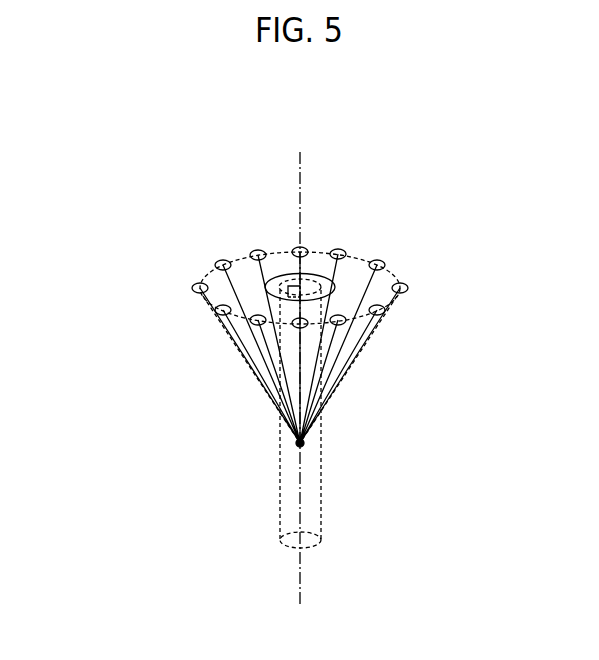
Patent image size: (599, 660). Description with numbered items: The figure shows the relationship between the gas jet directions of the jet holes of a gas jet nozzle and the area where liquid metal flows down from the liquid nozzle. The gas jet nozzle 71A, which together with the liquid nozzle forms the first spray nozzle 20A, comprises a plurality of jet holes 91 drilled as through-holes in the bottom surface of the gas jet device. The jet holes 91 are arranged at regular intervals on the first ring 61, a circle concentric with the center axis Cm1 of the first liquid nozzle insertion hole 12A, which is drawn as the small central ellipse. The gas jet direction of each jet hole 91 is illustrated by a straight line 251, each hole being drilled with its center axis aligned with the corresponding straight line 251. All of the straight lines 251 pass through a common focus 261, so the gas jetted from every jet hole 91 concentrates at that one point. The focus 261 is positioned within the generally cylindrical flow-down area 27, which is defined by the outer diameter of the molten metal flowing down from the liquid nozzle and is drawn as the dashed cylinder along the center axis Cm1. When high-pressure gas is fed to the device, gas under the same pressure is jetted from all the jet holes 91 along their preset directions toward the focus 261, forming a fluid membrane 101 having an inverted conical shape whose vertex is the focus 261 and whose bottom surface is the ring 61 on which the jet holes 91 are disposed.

The center axis Cm1 is at (304, 366).
The first ring 61 is at (395, 276).
The first spray nozzle 20A is at (187, 348).
The fluid membrane 101 is at (381, 356).
The gas jet nozzle 71A is at (172, 295).
The jet holes 91 is at (258, 250).
The straight lines 251 is at (257, 278).
The first liquid nozzle insertion hole 12A is at (321, 272).
The flow-down area 27 is at (321, 502).
The focus 261 is at (303, 446).